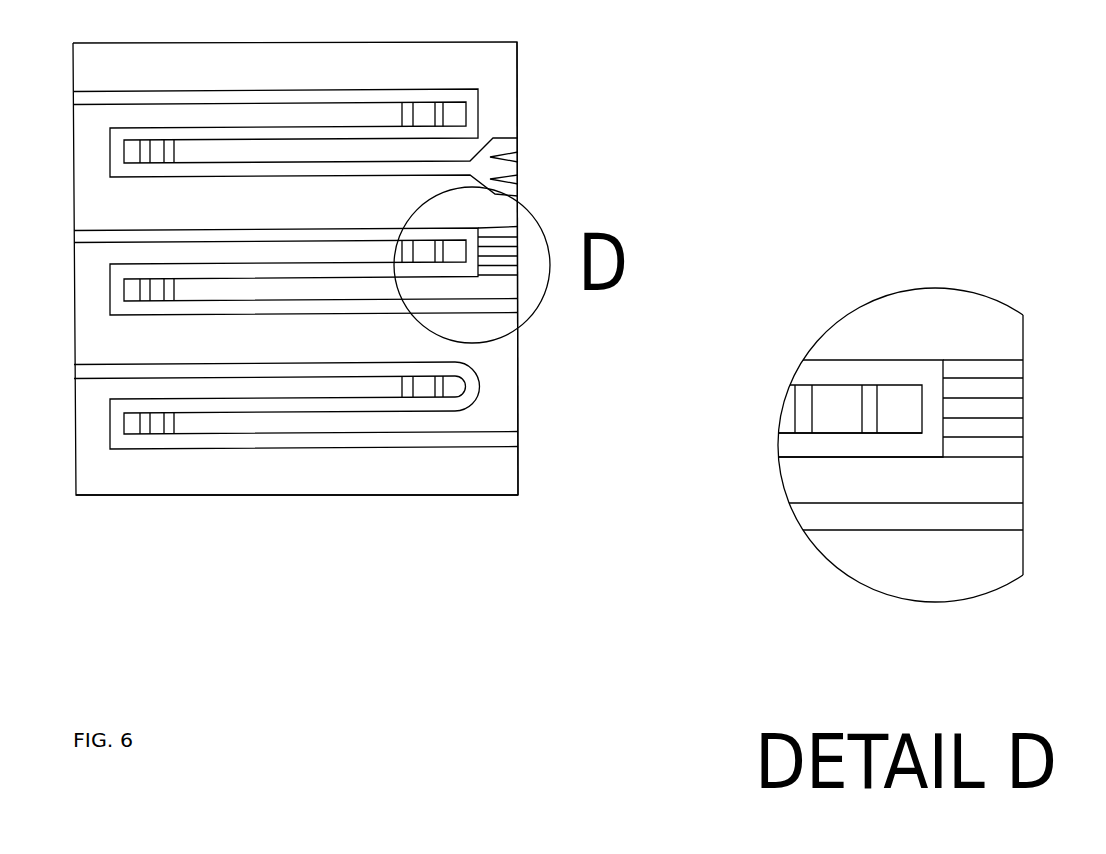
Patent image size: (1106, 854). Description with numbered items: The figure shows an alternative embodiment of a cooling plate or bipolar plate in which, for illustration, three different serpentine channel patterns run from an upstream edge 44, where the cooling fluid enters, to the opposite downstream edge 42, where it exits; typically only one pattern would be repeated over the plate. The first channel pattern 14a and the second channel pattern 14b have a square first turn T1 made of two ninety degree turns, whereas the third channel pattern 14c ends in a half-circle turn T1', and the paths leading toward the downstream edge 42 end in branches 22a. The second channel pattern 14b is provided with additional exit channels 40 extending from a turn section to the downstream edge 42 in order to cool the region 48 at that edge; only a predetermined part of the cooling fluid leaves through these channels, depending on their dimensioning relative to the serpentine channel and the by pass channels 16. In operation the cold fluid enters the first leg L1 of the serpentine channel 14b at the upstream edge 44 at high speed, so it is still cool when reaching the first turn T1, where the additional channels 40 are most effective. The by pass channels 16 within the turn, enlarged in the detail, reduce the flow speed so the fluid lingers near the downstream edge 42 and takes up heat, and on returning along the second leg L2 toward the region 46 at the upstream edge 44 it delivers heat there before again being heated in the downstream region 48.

In FIG. 6, the first channel pattern 14a is at (154, 172).
In FIG. 6, the second channel pattern 14b is at (255, 314).
In FIG. DETAIL D, the second channel pattern 14b is at (967, 513).
In FIG. 6, the third serpentine heating trace 14c is at (332, 446).
In FIG. DETAIL D, the by pass channels 16 is at (868, 410).
In FIG. 6, the terminal lead 22a is at (517, 142).
In FIG. DETAIL D, the additional exit channels 40 is at (978, 362).
In FIG. 6, the downstream edge 42 is at (530, 311).
In FIG. DETAIL D, the downstream edge 42 is at (1000, 322).
In FIG. 6, the upstream edge 44 is at (280, 311).
In FIG. 6, the region at the upstream edge 46 is at (90, 440).
In FIG. 6, the region at the downstream edge 48 is at (500, 408).
In FIG. 6, the first turn T1 is at (430, 240).
In FIG. DETAIL D, the first turn T1 is at (909, 268).
In FIG. 6, the temperature sensor location at rounded end T1' is at (565, 320).
In FIG. DETAIL D, the first leg L1 is at (832, 373).
In FIG. DETAIL D, the second leg L2 is at (797, 447).